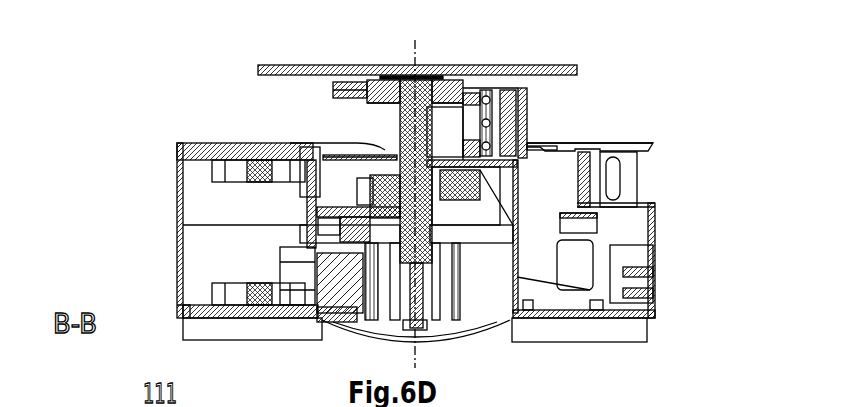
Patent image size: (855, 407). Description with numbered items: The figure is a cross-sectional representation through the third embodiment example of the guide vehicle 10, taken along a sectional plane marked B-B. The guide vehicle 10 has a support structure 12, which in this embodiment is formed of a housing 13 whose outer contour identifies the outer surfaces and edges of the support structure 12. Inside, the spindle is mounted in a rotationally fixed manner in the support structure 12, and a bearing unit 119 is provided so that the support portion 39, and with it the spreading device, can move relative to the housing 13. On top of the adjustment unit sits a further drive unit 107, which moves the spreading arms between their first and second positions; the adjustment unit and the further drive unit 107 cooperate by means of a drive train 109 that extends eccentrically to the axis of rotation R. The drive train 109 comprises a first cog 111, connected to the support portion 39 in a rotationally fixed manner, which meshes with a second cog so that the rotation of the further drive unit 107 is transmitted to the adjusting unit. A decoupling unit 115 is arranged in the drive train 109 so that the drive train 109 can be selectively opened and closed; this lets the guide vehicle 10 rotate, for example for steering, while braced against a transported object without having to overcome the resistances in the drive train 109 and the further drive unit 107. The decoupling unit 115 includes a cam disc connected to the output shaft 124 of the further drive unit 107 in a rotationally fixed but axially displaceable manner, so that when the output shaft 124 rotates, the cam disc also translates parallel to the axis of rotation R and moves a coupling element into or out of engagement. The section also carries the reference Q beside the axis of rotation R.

The guide vehicle 10 is at (160, 127).
The support structure 12 is at (366, 242).
The housing 13 is at (177, 252).
The support portion 39 is at (562, 63).
The further drive unit 107 is at (612, 177).
The drive train 109 is at (562, 88).
The first cog 111 is at (337, 98).
The decoupling unit 115 is at (545, 118).
The bearing unit 119 is at (382, 77).
The output shaft 124 is at (540, 141).
The axis of rotation R is at (418, 52).
The transverse axis Q is at (502, 41).